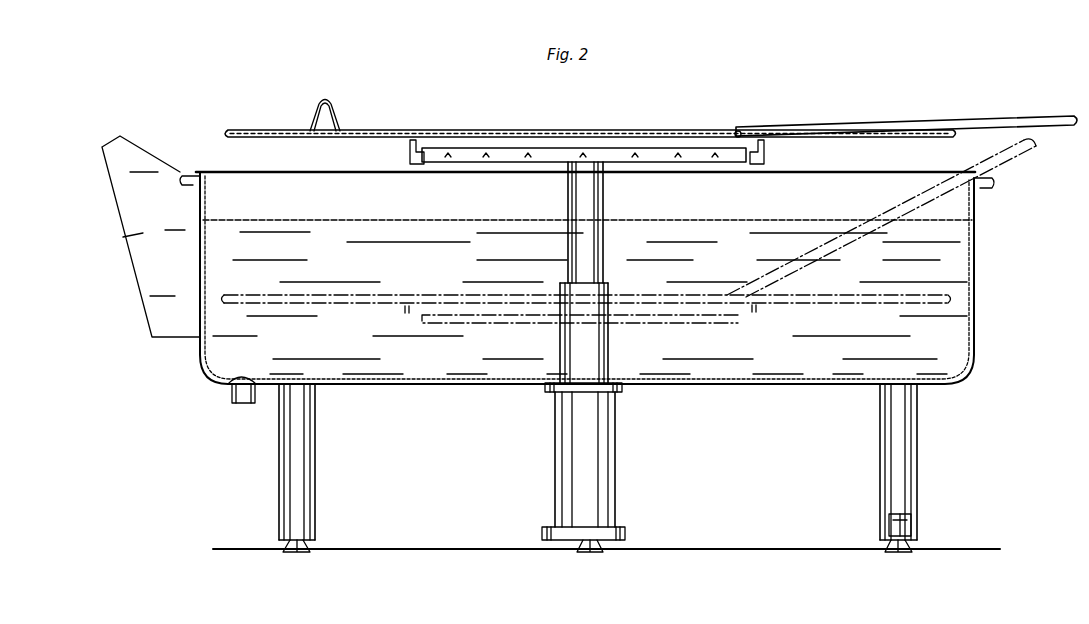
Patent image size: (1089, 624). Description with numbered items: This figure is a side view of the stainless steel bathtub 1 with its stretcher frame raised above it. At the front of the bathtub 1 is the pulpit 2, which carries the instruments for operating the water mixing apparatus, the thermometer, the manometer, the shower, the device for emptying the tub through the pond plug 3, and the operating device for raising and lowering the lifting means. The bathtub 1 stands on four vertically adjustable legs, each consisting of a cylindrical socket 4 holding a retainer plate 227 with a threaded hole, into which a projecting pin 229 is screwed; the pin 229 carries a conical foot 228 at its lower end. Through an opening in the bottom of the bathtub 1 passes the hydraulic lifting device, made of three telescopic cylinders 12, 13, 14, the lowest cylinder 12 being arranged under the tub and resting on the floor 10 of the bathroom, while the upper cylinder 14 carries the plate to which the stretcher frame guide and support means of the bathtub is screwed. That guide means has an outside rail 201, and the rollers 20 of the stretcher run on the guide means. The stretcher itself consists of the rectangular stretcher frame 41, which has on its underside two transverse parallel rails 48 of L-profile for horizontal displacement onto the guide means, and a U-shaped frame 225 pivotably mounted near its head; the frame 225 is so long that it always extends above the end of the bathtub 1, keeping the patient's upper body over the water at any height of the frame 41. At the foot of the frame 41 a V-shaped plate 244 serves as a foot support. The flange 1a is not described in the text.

The bathtub 1 is at (962, 233).
The flange 1a is at (562, 388).
The pulpit 2 is at (147, 233).
The pond plug 3 is at (244, 393).
The cylindrical socket 4 is at (280, 447).
The floor 10 is at (738, 550).
The telescopic cylinder 12 is at (587, 408).
The telescopic cylinder 13 is at (583, 350).
The upper cylinder 14 is at (583, 212).
The rollers 20 is at (411, 160).
The stretcher frame 41 is at (253, 131).
The transverse parallel rails 48 is at (415, 143).
The outside rail 201 is at (458, 152).
The U-shaped frame 225 is at (910, 123).
The retainer plate 227 is at (908, 527).
The conical foot 228 is at (282, 544).
The projecting pin 229 is at (905, 520).
The V-shaped plate 244 is at (328, 103).